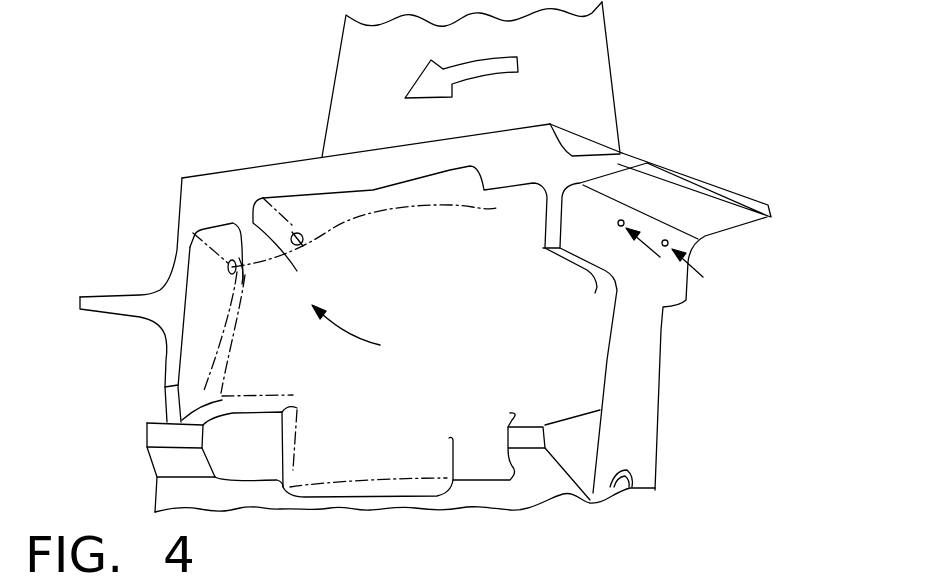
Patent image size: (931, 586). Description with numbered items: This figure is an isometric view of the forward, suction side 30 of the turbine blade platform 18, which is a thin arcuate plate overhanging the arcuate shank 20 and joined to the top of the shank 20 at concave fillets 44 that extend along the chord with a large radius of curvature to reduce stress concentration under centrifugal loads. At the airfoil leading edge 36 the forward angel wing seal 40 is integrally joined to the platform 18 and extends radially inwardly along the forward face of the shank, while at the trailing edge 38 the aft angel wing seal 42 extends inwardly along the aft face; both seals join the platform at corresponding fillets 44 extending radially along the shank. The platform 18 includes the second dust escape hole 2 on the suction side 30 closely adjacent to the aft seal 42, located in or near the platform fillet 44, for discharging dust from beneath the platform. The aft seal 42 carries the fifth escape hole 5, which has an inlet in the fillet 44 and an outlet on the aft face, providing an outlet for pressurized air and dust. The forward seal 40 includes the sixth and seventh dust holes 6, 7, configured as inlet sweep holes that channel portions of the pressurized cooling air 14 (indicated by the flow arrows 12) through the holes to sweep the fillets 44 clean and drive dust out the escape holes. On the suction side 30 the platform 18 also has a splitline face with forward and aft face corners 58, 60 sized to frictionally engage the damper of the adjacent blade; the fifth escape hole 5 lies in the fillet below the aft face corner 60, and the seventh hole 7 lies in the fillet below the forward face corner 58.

The second dust escape hole 2 is at (301, 236).
The fifth escape hole 5 is at (229, 267).
The sixth dust hole 6 is at (667, 239).
The seventh dust hole 7 is at (626, 220).
The pressurized cooling air 12 is at (462, 60).
The pressurized cooling air 14 is at (360, 342).
The platform 18 is at (240, 169).
The shank 20 is at (661, 351).
The suction side 30 is at (532, 113).
The leading edge 36 is at (609, 49).
The trailing edge 38 is at (334, 83).
The forward angel wing seal 40 is at (772, 205).
The aft angel wing seal 42 is at (112, 297).
The fillets 44 is at (223, 333).
The forward face corner 58 is at (532, 167).
The aft face corner 60 is at (226, 217).